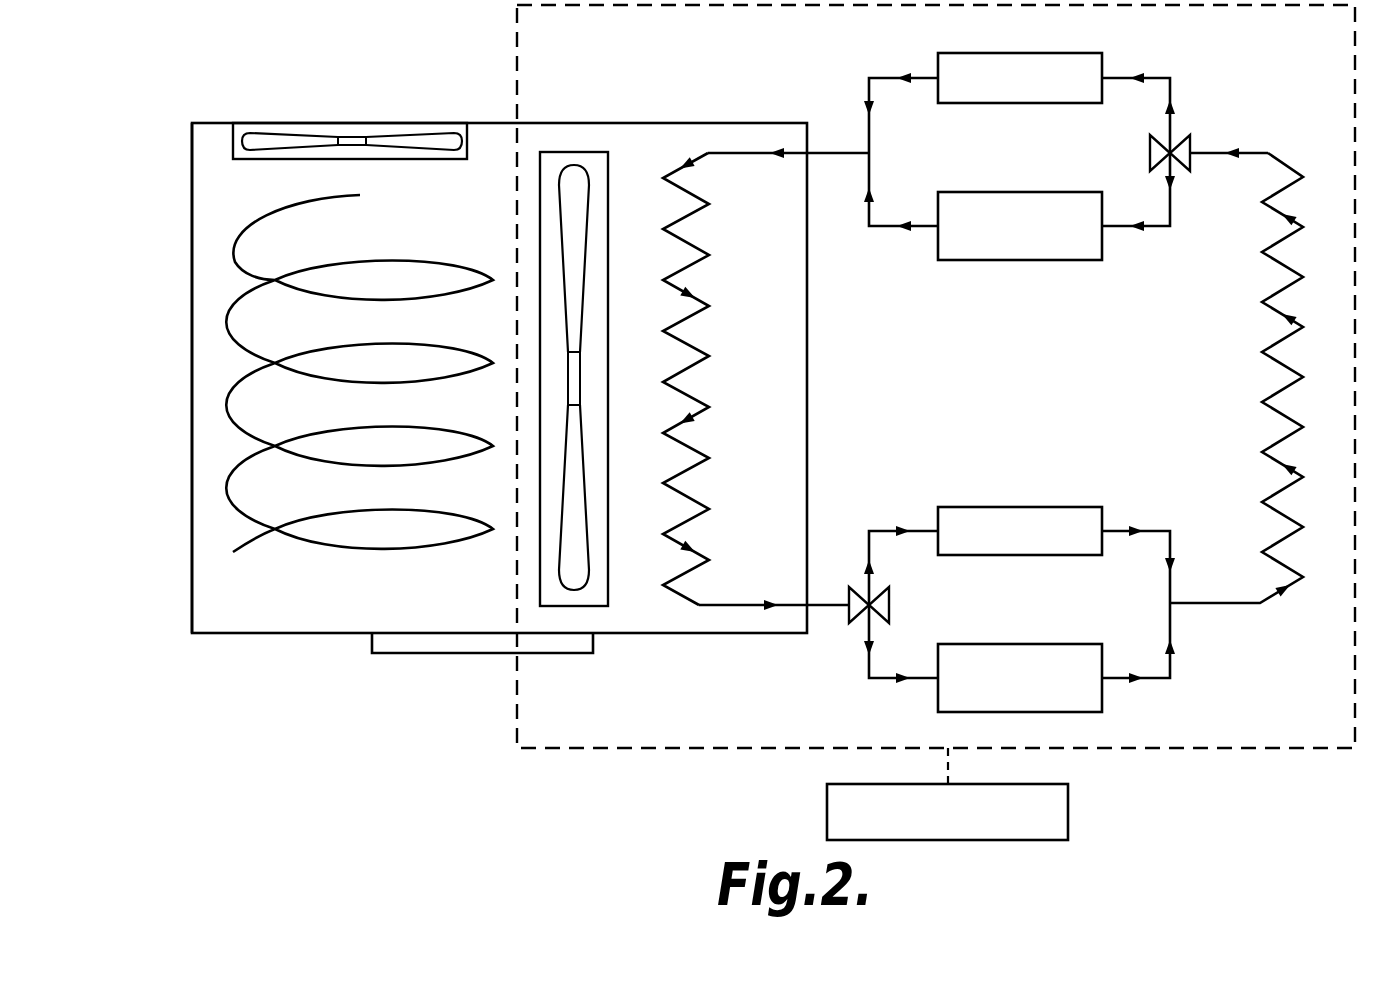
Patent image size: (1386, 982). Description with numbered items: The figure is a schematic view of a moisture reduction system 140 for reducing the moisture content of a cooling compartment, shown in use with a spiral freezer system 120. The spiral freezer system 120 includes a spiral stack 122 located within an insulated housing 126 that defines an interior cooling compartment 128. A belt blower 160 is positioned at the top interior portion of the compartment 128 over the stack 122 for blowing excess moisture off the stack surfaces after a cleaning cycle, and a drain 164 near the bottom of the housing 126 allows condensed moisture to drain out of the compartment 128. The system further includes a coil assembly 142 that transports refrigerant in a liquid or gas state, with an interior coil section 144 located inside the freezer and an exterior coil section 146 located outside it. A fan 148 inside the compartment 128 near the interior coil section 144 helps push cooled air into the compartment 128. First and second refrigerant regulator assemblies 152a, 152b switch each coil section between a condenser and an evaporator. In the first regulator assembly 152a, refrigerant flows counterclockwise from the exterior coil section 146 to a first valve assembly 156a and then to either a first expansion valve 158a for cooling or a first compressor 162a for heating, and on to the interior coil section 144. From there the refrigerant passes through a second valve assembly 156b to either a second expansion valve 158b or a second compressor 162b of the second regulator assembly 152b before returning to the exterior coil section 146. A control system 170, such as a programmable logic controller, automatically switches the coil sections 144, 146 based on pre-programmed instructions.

The spiral freezer system 120 is at (157, 115).
The spiral stack 122 is at (286, 558).
The insulated housing 126 is at (192, 215).
The interior cooling compartment 128 is at (210, 442).
The moisture reduction system 140 is at (595, 762).
The coil assembly 142 is at (790, 152).
The interior coil section 144 is at (690, 160).
The exterior coil section 146 is at (1288, 166).
The fan 148 is at (575, 152).
The first refrigerant regulator assembly 152a is at (1171, 50).
The second refrigerant regulator assembly 152b is at (1171, 452).
The first valve assembly 156a is at (1190, 137).
The second valve assembly 156b is at (889, 590).
The first expansion valve 158a is at (1023, 260).
The second expansion valve 158b is at (1022, 712).
The belt blower 160 is at (307, 137).
The first compressor 162a is at (1023, 53).
The second compressor 162b is at (1017, 507).
The drain 164 is at (465, 640).
The control system 170 is at (1068, 812).